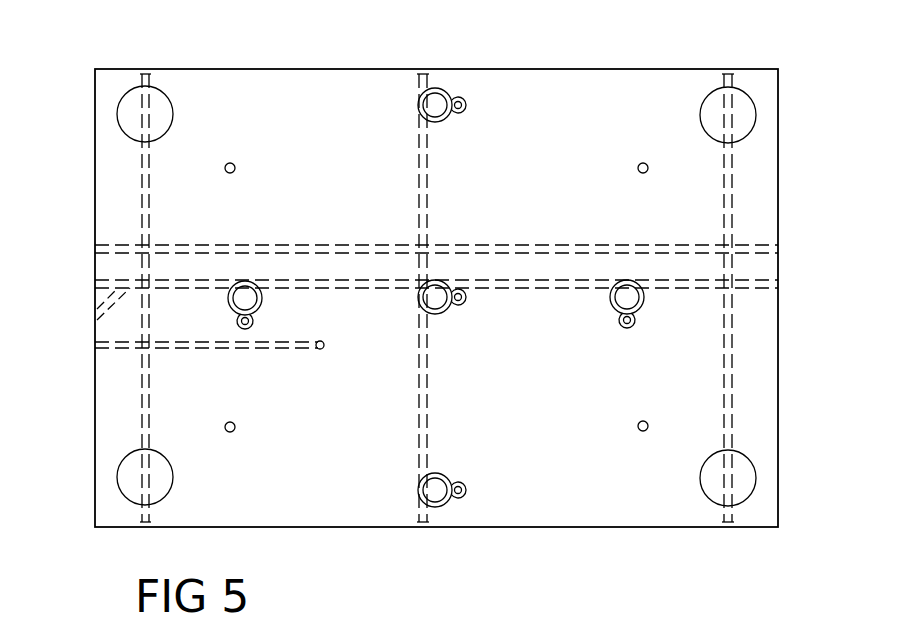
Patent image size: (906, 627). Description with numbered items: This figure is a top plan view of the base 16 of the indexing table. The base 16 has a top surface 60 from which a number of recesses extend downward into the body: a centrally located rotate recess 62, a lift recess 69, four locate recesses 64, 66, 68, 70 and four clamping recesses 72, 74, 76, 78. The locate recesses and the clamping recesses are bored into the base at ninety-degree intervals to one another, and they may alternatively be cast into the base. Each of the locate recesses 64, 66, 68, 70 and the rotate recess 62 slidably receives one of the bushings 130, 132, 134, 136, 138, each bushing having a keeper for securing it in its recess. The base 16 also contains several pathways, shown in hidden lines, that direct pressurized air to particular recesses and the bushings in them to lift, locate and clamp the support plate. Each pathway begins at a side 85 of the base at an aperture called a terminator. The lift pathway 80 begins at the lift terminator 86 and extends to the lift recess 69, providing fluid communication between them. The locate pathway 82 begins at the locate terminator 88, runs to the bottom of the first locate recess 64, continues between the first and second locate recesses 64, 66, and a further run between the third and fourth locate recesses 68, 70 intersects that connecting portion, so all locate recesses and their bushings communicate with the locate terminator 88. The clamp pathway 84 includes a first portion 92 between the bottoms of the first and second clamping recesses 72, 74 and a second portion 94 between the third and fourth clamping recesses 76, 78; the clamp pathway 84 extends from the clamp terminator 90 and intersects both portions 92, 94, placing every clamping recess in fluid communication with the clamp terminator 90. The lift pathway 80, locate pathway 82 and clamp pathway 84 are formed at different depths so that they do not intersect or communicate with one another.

The base 16 is at (798, 490).
The top surface 60 is at (351, 512).
The rotate recess 62 is at (433, 295).
The first locate recess 64 is at (243, 298).
The second locate recess 66 is at (450, 500).
The third locate recess 68 is at (638, 308).
The lift recess 69 is at (316, 347).
The fourth locate recess 70 is at (458, 100).
The first clamping recess 72 is at (130, 483).
The second clamping recess 74 is at (708, 486).
The third clamping recess 76 is at (748, 118).
The fourth clamping recess 78 is at (163, 100).
The lift pathway 80 is at (178, 347).
The locate pathway 82 is at (706, 280).
The clamp pathway 84 is at (120, 245).
The side 85 is at (95, 185).
The lift terminator 86 is at (92, 355).
The locate terminator 88 is at (100, 318).
The clamp terminator 90 is at (95, 247).
The first portion 92 is at (140, 157).
The second portion 94 is at (732, 178).
The bushing 130 is at (243, 300).
The bushing 132 is at (435, 96).
The bushing 134 is at (440, 292).
The bushing 136 is at (421, 497).
The bushing 138 is at (633, 298).